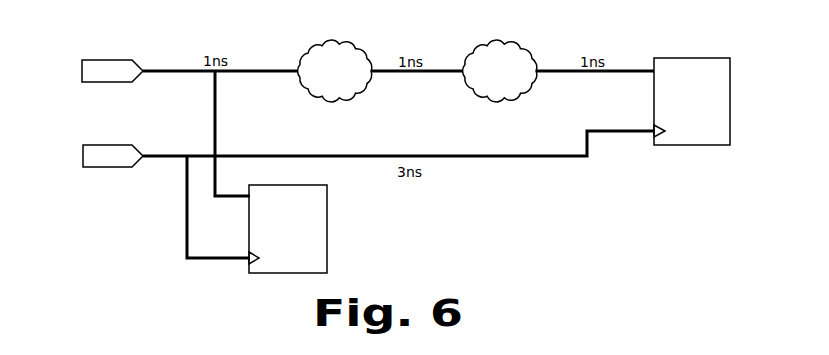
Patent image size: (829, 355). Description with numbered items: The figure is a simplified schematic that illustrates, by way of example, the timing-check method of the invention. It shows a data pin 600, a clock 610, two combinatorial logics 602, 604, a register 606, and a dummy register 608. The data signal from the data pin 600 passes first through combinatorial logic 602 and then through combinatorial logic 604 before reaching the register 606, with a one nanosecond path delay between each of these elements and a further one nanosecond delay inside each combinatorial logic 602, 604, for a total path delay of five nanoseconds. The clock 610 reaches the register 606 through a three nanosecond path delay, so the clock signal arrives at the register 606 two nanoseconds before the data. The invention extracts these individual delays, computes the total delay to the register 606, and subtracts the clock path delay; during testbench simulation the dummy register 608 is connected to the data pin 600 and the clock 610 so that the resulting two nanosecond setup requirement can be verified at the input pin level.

The data pin 600 is at (82, 71).
The clock 610 is at (83, 156).
The combinatorial logic 602 is at (360, 50).
The combinatorial logic 604 is at (525, 50).
The register 606 is at (731, 103).
The dummy register 608 is at (328, 232).